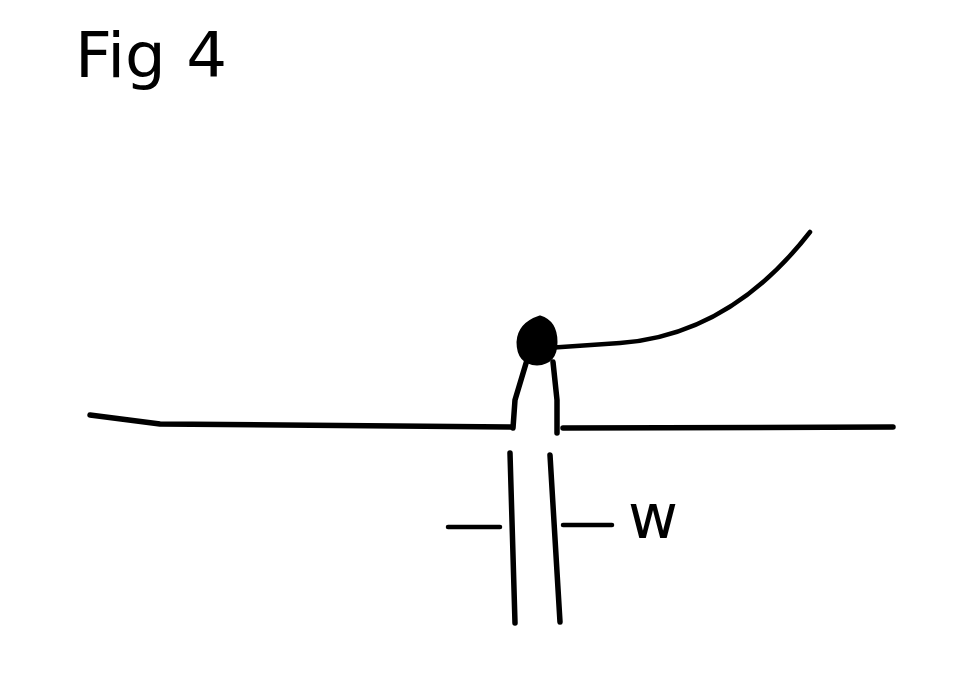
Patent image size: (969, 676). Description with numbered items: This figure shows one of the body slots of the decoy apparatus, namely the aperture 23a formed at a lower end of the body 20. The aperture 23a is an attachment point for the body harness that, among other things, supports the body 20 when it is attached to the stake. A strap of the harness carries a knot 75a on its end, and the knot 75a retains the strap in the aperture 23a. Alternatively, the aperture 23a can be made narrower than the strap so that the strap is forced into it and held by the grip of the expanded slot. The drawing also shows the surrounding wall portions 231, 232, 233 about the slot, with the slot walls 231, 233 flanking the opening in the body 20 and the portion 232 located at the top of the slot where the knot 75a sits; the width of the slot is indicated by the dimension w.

The body 20 is at (165, 423).
The first side wall of recess 231 is at (512, 370).
The bottom of recess 232 is at (553, 313).
The second side wall of recess 233 is at (563, 407).
The aperture 23a is at (507, 272).
The knot 75a is at (736, 264).